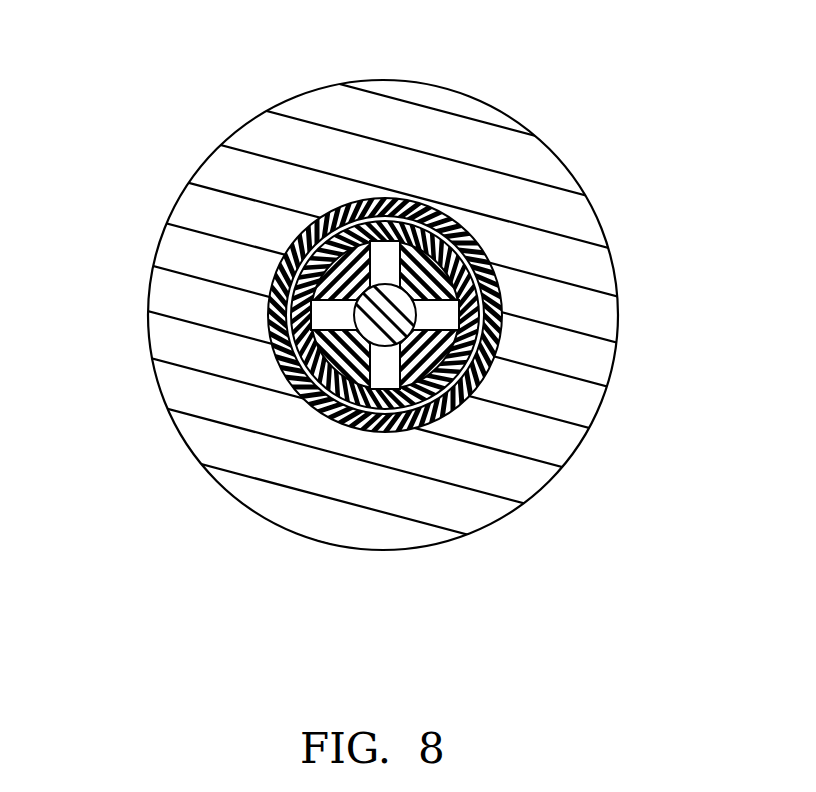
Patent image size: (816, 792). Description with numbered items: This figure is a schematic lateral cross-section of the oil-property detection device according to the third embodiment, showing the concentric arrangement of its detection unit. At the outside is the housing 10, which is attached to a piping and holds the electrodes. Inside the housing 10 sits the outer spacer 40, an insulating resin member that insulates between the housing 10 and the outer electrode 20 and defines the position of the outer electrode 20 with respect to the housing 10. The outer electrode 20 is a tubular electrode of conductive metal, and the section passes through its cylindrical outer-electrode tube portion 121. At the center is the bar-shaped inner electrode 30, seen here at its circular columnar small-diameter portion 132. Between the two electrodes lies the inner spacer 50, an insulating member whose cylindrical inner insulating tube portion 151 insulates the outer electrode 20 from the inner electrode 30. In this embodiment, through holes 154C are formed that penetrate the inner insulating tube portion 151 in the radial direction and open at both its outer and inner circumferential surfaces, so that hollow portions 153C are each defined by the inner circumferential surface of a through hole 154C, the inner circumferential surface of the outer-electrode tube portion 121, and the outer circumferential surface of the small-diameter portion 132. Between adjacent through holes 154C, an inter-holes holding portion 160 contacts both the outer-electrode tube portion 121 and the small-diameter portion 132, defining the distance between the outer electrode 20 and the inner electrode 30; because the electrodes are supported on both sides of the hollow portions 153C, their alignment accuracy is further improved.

The housing 10 is at (235, 477).
The outer spacer 40 is at (310, 386).
The outer electrode 20 is at (323, 421).
The outer-electrode tube portion 121 is at (323, 421).
The hollow portion 153C is at (400, 403).
The inner spacer 50 is at (318, 339).
The inner insulating tube portion 151 is at (322, 348).
The inter-holes holding portion 160 is at (535, 217).
The through hole 154C is at (370, 253).
The inner electrode 30 is at (235, 332).
The small-diameter portion 132 is at (368, 303).